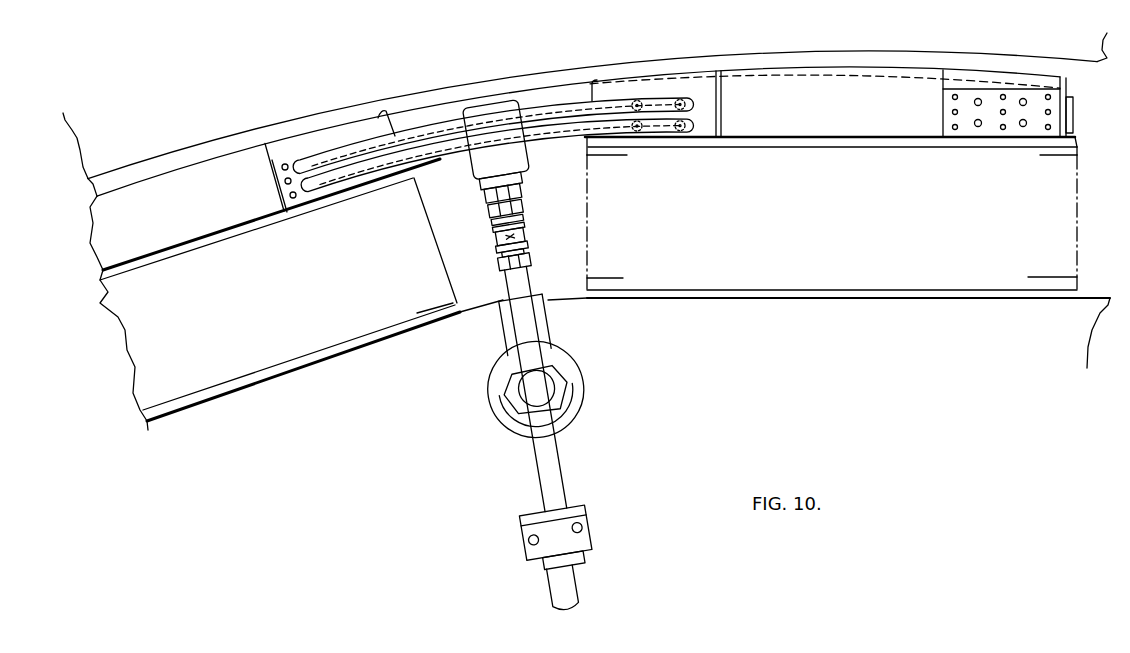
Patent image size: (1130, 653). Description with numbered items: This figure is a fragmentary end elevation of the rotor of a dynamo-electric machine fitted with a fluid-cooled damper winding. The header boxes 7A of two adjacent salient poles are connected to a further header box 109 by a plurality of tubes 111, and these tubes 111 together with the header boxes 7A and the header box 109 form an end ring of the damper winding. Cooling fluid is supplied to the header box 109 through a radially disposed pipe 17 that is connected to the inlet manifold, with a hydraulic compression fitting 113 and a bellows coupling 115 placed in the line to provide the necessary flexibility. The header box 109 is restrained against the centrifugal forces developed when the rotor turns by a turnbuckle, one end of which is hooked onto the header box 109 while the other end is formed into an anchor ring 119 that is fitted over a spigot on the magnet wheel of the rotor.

The header box 7A is at (230, 180).
The header box 109 is at (535, 103).
The tube 111 is at (425, 127).
The hydraulic compression fitting 113 is at (530, 260).
The bellows coupling 115 is at (535, 232).
The radially disposed pipe 17 is at (558, 467).
The anchor ring 119 is at (575, 380).